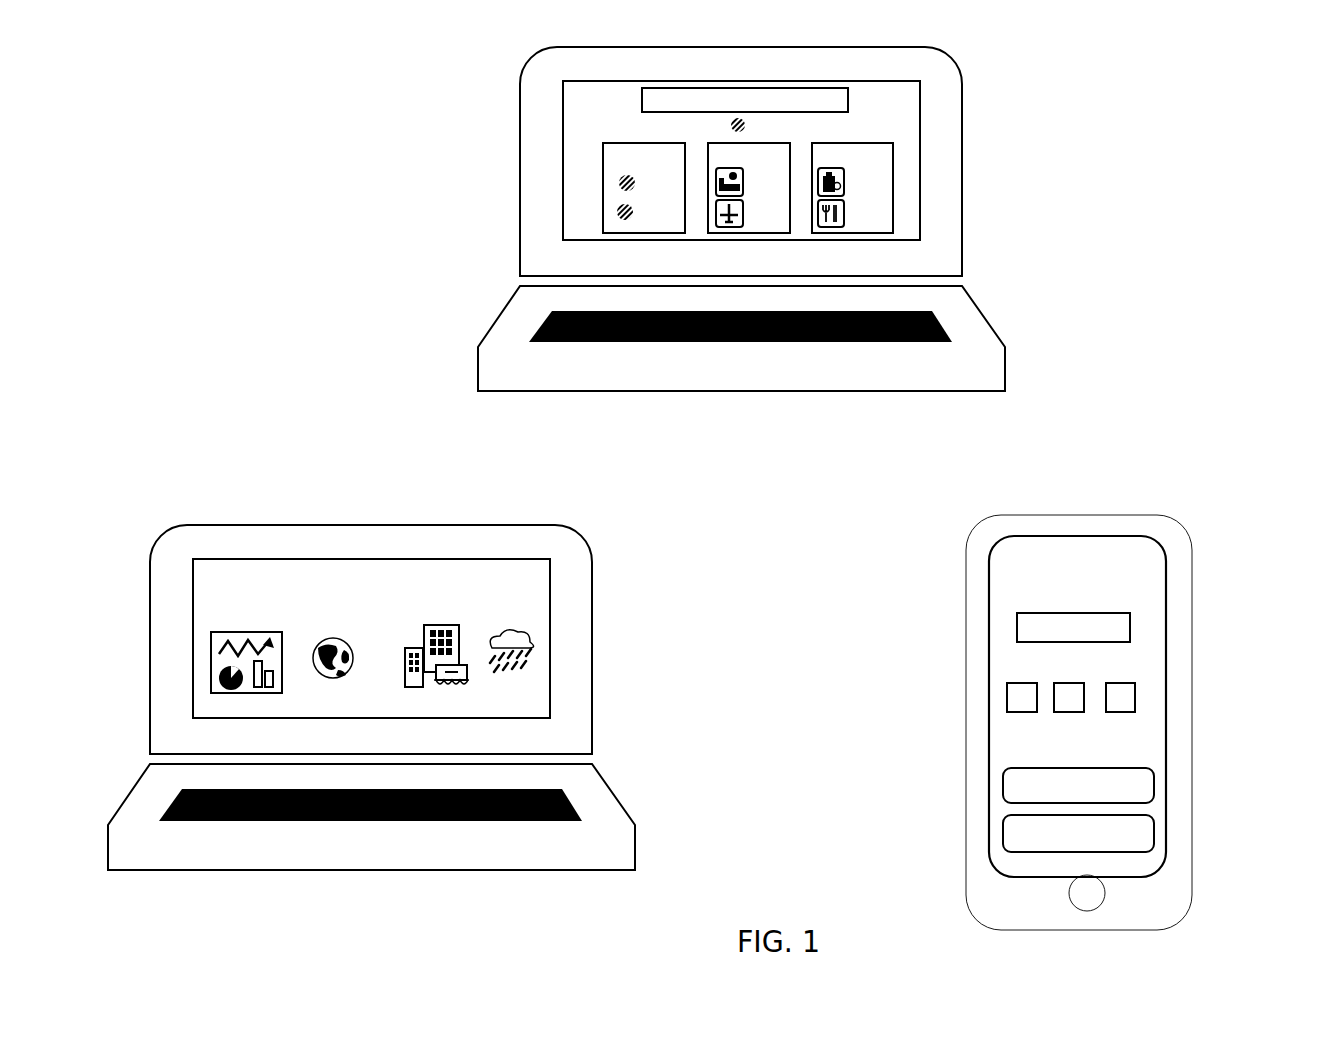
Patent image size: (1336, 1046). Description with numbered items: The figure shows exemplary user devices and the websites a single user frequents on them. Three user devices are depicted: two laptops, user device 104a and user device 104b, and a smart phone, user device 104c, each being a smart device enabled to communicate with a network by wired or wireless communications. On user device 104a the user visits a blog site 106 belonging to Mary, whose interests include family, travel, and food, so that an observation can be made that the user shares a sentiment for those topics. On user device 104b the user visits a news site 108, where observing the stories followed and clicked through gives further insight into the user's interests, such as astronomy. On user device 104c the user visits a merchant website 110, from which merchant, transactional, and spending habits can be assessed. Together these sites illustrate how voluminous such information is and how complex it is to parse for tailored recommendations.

The user device 104a is at (962, 103).
The user device 104b is at (590, 580).
The user device 104c is at (1192, 583).
The blog site 106 is at (918, 197).
The news site 108 is at (540, 685).
The merchant website 110 is at (1140, 828).